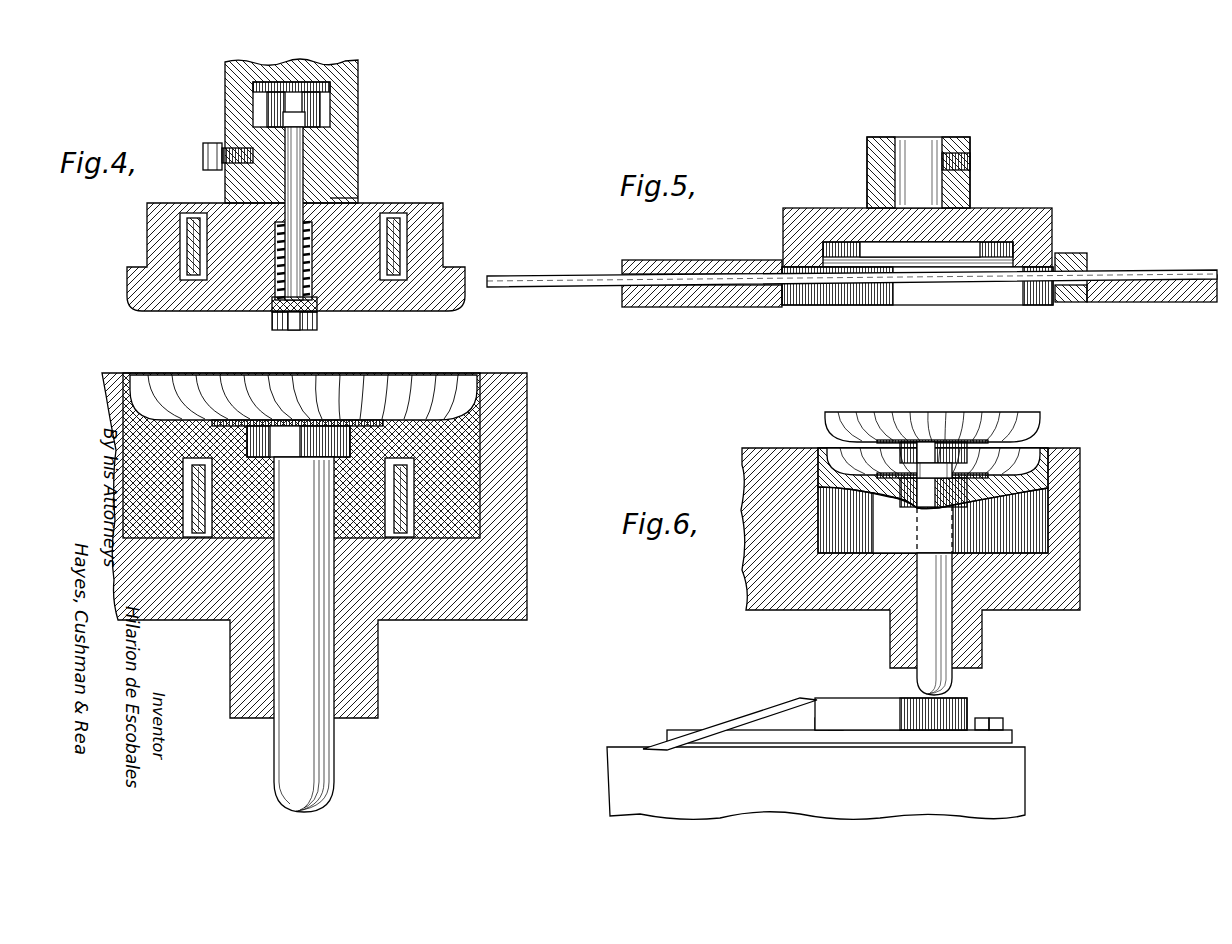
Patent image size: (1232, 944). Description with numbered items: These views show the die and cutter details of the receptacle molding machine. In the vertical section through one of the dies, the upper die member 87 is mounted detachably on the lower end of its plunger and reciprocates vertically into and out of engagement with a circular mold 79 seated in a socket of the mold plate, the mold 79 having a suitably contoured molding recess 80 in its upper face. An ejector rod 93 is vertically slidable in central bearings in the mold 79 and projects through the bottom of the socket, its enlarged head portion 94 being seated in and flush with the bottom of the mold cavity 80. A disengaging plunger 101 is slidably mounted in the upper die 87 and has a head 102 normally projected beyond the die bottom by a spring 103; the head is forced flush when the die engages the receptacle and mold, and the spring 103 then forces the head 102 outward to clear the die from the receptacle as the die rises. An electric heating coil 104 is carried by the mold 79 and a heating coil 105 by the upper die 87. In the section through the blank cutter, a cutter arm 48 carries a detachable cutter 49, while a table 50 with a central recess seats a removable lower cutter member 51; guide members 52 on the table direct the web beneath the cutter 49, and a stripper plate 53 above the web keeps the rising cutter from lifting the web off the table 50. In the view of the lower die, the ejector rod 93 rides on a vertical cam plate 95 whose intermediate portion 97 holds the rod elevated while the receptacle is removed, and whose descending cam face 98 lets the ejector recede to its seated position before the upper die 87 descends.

In FIG. 5, the cutter arm 48 is at (970, 140).
In FIG. 5, the cutter 49 is at (1033, 205).
In FIG. 5, the table 50 is at (1128, 292).
In FIG. 5, the lower cutter member 51 is at (1057, 300).
In FIG. 5, the guide members 52 is at (727, 273).
In FIG. 5, the stripper plate 53 is at (1067, 253).
In FIG. 4, the mold 79 is at (467, 383).
In FIG. 6, the mold 79 is at (910, 558).
In FIG. 4, the molding recess 80 is at (400, 382).
In FIG. 6, the molding recess 80 is at (1022, 452).
In FIG. 4, the upper die member 87 is at (440, 222).
In FIG. 4, the ejector rod 93 is at (323, 740).
In FIG. 6, the ejector rod 93 is at (955, 680).
In FIG. 4, the enlarged head portion 94 is at (275, 437).
In FIG. 6, the enlarged head portion 94 is at (930, 448).
In FIG. 6, the cam plate 95 is at (885, 718).
In FIG. 6, the intermediate portion 97 is at (838, 698).
In FIG. 6, the descending cam face 98 is at (740, 720).
In FIG. 4, the disengaging plunger 101 is at (298, 168).
In FIG. 4, the head 102 is at (284, 326).
In FIG. 4, the spring 103 is at (318, 268).
In FIG. 4, the electric heating coil 104 is at (410, 483).
In FIG. 4, the heating coil 105 is at (395, 208).